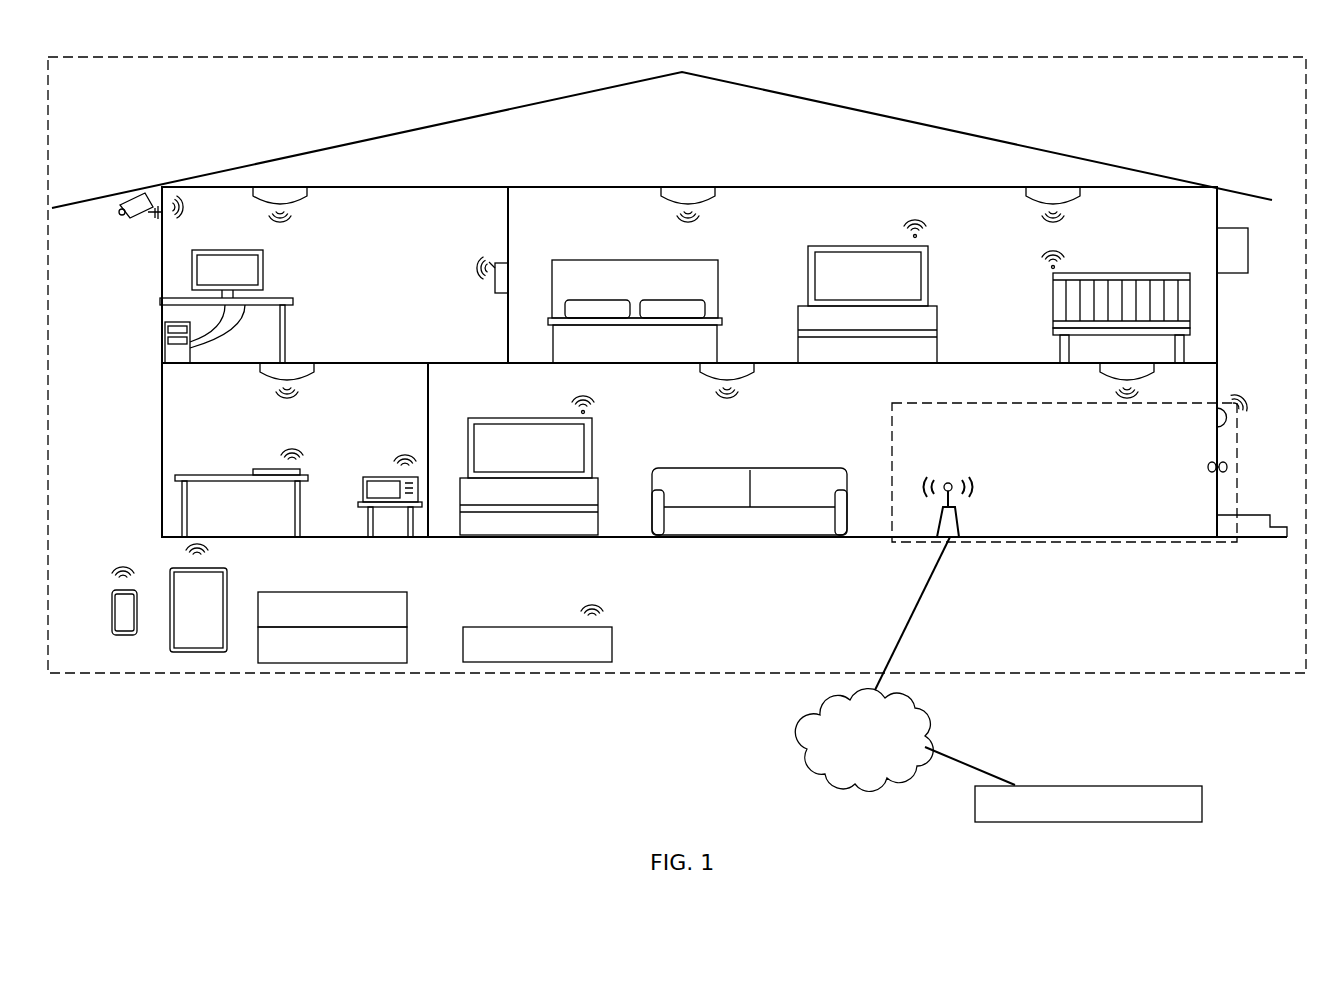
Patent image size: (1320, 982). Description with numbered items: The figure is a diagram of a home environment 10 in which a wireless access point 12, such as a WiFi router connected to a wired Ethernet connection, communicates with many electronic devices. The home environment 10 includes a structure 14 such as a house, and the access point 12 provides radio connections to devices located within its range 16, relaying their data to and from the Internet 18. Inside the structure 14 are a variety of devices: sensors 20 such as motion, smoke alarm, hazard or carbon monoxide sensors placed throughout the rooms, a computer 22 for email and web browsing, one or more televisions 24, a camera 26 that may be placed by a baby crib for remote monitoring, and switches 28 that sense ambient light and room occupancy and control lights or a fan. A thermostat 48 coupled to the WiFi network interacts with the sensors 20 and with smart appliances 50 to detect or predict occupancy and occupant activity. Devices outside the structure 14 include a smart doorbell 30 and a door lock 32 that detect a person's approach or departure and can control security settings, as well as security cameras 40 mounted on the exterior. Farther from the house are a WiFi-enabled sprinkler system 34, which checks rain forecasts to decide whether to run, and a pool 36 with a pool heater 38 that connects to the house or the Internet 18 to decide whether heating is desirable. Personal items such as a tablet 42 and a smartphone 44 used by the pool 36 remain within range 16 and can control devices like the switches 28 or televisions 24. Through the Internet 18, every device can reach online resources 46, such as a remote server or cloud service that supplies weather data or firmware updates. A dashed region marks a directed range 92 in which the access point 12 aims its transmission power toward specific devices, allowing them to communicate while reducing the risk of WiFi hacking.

The home environment 10 is at (1066, 104).
The wireless access point 12 is at (938, 523).
The structure 14 is at (398, 133).
The range 16 is at (1085, 674).
The Internet 18 is at (928, 734).
The sensors 20 is at (300, 203).
The computer 22 is at (224, 250).
The televisions 24 is at (828, 246).
The camera 26 is at (1152, 273).
The switches 28 is at (495, 281).
The smart doorbell 30 is at (1228, 428).
The door lock 32 is at (1228, 474).
The sprinkler system 34 is at (530, 663).
The pool 36 is at (325, 663).
The pool heater 38 is at (296, 597).
The security cameras 40 is at (124, 214).
The tablet 42 is at (112, 622).
The smartphone 44 is at (170, 617).
The online resources 46 is at (1083, 823).
The thermostat 48 is at (268, 471).
The smart appliances 50 is at (377, 477).
The range 92 is at (1012, 403).